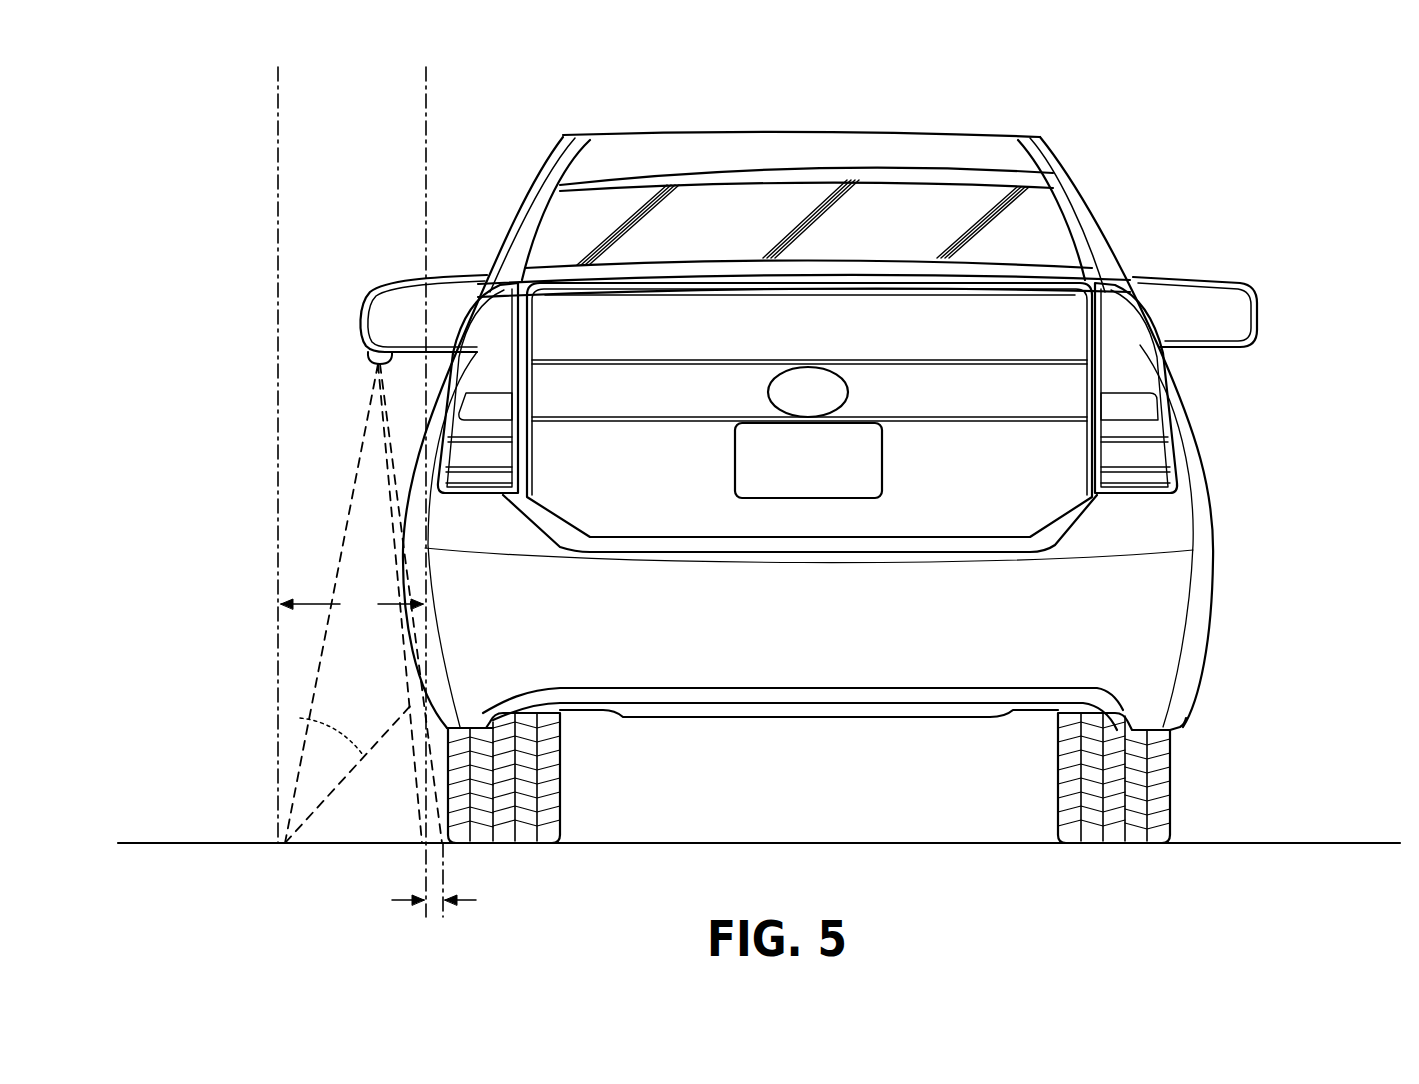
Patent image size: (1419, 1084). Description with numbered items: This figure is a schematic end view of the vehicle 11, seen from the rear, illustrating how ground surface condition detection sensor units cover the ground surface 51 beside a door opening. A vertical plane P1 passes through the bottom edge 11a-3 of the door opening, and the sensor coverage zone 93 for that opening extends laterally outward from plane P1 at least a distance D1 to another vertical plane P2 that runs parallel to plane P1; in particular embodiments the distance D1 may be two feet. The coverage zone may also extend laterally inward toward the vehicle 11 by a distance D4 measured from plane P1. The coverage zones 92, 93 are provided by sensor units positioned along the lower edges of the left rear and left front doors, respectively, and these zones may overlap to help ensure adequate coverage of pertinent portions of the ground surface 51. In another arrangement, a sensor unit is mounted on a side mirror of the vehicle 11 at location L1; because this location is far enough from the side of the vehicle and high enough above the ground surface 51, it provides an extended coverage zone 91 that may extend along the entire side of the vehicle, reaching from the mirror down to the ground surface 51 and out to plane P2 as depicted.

The vehicle 11 is at (808, 466).
The bottom edge of the door opening 11a-3 is at (462, 680).
The ground surface 51 is at (213, 843).
The extended coverage zone 91 is at (350, 490).
The sensor coverage zone 92 is at (300, 718).
The sensor coverage zone 93 is at (300, 718).
The sensor unit location on side mirror L1 is at (366, 352).
The vertical plane P1 is at (428, 118).
The vertical plane P2 is at (280, 118).
The distance D1 is at (352, 605).
The distance D4 is at (450, 901).